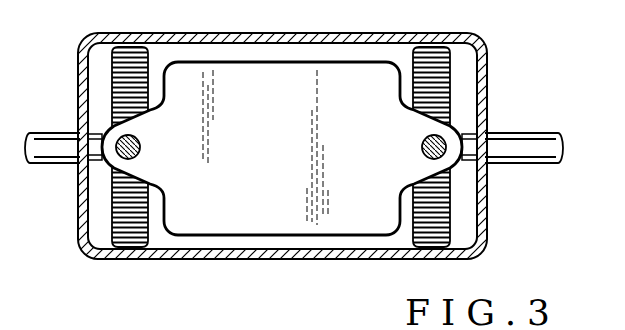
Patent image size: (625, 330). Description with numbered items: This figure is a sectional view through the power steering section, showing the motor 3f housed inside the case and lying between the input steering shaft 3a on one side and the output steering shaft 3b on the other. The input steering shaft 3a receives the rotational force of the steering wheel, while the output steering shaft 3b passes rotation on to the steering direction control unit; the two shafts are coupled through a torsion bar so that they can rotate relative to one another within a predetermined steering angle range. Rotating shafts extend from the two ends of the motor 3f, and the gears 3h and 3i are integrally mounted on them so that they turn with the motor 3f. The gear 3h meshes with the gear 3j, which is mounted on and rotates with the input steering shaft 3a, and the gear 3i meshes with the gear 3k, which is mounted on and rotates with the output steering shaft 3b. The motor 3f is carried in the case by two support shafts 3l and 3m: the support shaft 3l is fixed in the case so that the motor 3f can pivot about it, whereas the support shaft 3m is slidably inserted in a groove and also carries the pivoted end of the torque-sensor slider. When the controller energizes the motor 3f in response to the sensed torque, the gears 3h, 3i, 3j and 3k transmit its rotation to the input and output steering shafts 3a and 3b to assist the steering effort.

The input steering shaft 3a is at (524, 145).
The output steering shaft 3b is at (59, 142).
The motor 3f is at (268, 226).
The gear 3h is at (430, 183).
The gear 3i is at (116, 102).
The gear 3j is at (452, 232).
The gear 3k is at (131, 240).
The support shaft 3l is at (141, 145).
The support shaft 3m is at (428, 135).